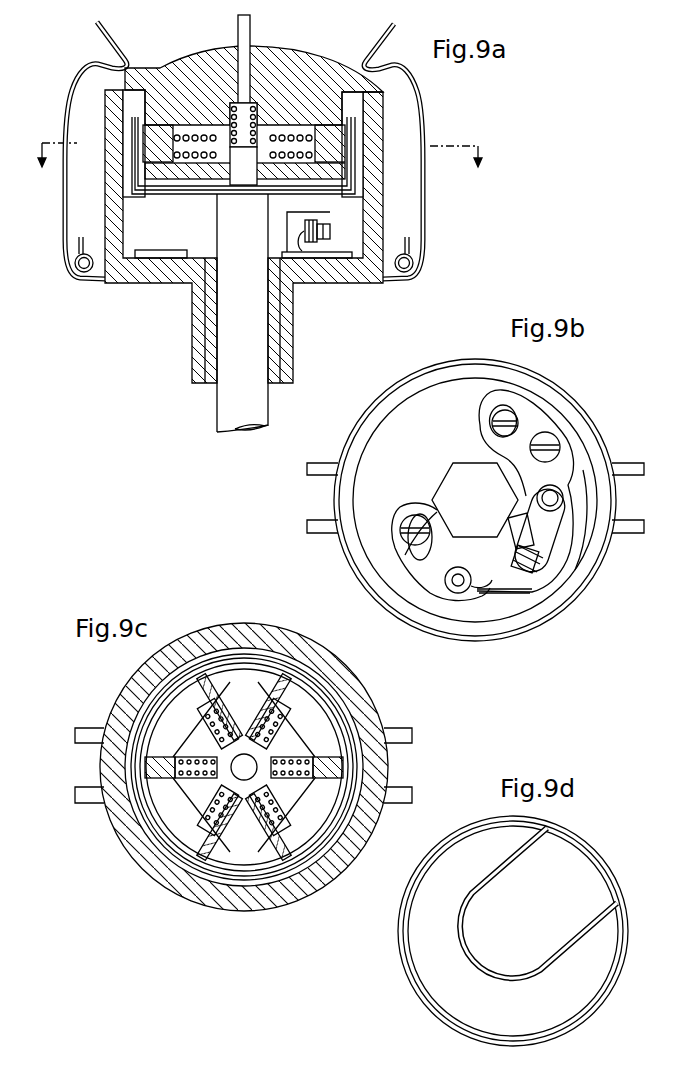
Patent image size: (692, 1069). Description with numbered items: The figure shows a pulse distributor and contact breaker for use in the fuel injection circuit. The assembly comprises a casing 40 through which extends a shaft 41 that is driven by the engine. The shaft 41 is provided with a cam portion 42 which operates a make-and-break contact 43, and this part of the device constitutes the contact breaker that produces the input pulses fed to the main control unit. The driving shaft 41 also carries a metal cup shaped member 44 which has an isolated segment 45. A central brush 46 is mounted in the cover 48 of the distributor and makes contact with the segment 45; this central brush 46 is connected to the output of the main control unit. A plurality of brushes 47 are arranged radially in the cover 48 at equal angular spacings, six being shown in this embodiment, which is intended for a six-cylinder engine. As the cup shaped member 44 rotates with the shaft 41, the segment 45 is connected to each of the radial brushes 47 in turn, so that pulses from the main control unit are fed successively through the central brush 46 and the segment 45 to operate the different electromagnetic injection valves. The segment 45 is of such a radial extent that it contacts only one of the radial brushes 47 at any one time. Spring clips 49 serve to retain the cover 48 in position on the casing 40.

In FIG. 9a, the casing 40 is at (305, 305).
In FIG. 9b, the casing 40 is at (567, 408).
In FIG. 9a, the shaft 41 is at (224, 401).
In FIG. 9a, the cam portion 42 is at (215, 227).
In FIG. 9b, the cam portion 42 is at (475, 500).
In FIG. 9a, the make-and-break contact 43 is at (303, 233).
In FIG. 9b, the make-and-break contact 43 is at (531, 592).
In FIG. 9a, the metal cup shaped member 44 is at (352, 181).
In FIG. 9d, the metal cup shaped member 44 is at (473, 995).
In FIG. 9c, the isolated segment 45 is at (348, 821).
In FIG. 9d, the isolated segment 45 is at (528, 933).
In FIG. 9a, the central brush 46 is at (250, 166).
In FIG. 9a, the radial brushes 47 is at (148, 134).
In FIG. 9c, the radial brushes 47 is at (192, 757).
In FIG. 9a, the cover 48 is at (327, 72).
In FIG. 9a, the spring clips 49 is at (93, 80).